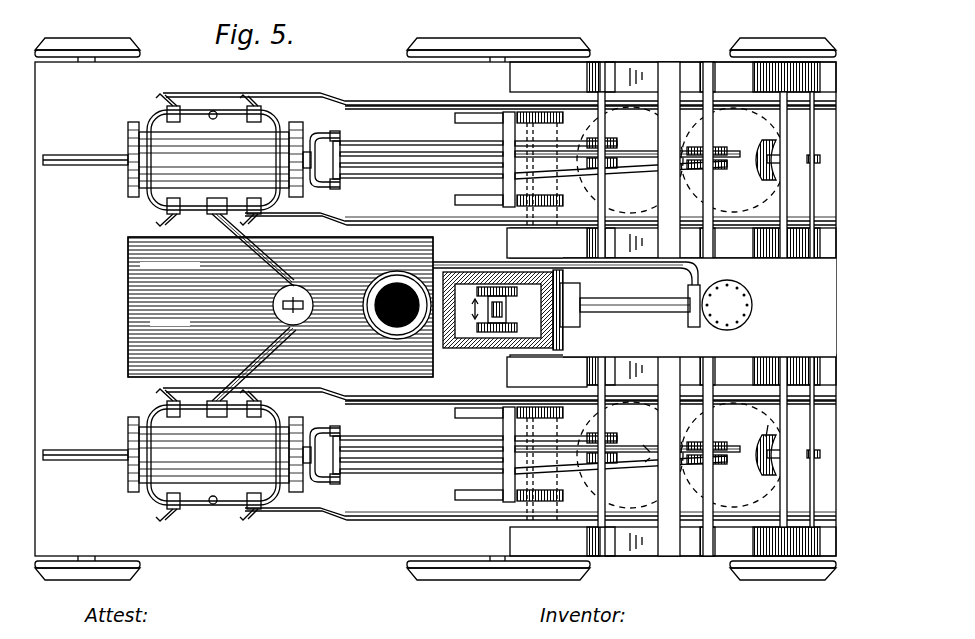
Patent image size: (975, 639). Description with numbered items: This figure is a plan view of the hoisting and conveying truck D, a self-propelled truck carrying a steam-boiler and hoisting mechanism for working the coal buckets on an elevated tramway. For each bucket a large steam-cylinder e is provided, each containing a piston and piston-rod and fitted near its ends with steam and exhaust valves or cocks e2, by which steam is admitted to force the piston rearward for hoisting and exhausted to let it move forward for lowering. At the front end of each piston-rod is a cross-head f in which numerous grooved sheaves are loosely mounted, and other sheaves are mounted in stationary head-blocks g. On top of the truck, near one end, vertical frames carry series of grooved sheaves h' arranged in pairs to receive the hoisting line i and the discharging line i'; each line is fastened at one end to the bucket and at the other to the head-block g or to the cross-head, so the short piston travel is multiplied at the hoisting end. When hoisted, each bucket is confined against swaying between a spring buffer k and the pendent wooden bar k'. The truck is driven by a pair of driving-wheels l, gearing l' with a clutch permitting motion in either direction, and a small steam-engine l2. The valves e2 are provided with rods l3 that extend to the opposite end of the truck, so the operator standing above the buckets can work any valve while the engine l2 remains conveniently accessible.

The hoisting and conveying truck D is at (258, 307).
The large steam-cylinder e is at (177, 307).
The steam and exhaust valves or cocks e2 is at (270, 403).
The cross-head f is at (333, 301).
The stationary head-block g is at (509, 316).
The grooved sheaves h' is at (627, 300).
The hoisting chain or line i is at (644, 469).
The discharging chain or line i' is at (644, 441).
The spring buffer k is at (766, 424).
The pendent bar buffer k' is at (785, 307).
The driving-wheels l is at (435, 309).
The gearing l' is at (503, 310).
The propelling steam-engine l2 is at (592, 296).
The valve rods l3 is at (499, 310).